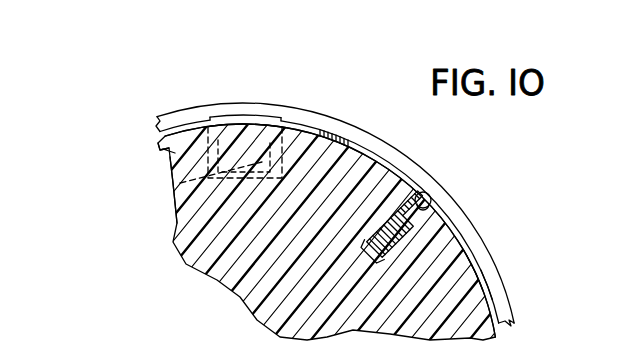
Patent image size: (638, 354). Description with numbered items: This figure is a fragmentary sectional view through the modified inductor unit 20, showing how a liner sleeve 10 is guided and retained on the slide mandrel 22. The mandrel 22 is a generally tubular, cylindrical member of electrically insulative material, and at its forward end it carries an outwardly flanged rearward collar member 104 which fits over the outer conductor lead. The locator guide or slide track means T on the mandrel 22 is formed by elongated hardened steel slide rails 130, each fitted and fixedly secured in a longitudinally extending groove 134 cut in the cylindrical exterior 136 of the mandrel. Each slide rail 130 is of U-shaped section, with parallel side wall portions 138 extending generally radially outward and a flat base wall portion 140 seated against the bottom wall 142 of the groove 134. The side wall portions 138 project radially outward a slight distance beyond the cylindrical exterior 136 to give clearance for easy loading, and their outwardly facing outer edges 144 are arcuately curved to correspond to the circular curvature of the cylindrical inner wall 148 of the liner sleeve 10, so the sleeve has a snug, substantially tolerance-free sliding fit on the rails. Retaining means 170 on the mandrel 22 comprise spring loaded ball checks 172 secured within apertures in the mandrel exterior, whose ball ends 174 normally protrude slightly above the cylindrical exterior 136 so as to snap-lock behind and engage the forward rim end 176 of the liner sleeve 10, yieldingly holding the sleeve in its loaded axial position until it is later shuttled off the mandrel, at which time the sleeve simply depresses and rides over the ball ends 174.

The liner sleeve 10 is at (398, 150).
The inductor unit 20 is at (478, 288).
The slide mandrel 22 is at (352, 150).
The rearward collar member 104 is at (166, 346).
The slide rail 130 is at (274, 124).
The groove 134 is at (228, 124).
The cylindrical exterior 136 is at (470, 264).
The side wall portion 138 is at (316, 128).
The base wall portion 140 is at (265, 185).
The bottom wall 142 is at (178, 216).
The outer edge 144 is at (210, 123).
The cylindrical inner wall 148 is at (164, 151).
The retaining means 170 is at (448, 194).
The spring loaded ball check 172 is at (409, 240).
The ball end 174 is at (428, 192).
The forward rim end 176 is at (504, 310).
The locator guide T is at (202, 123).